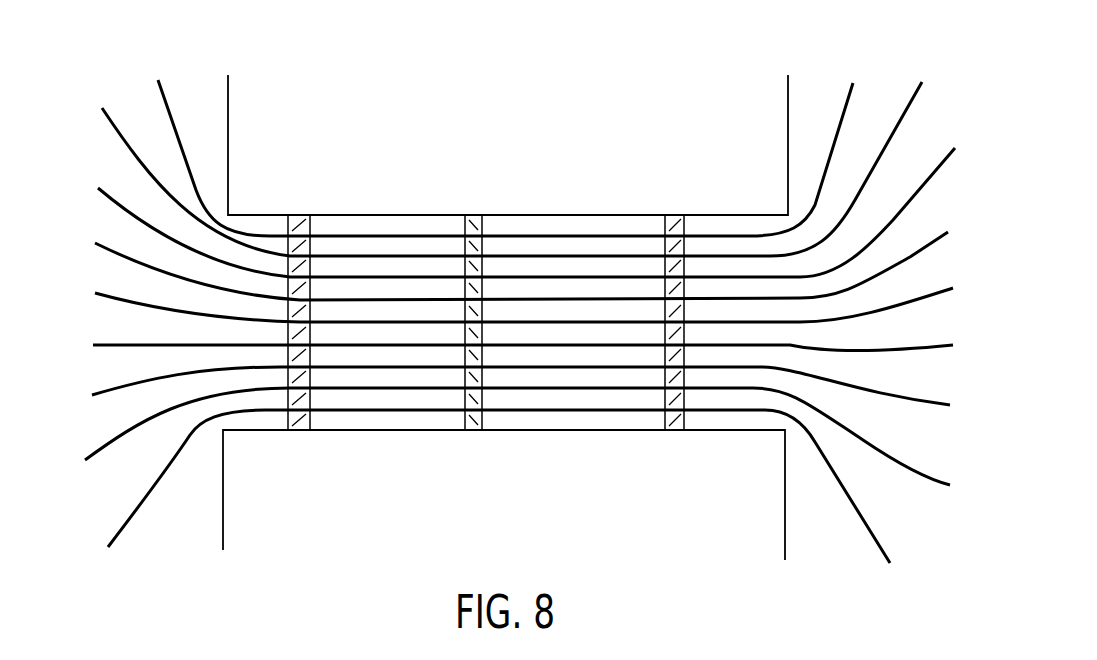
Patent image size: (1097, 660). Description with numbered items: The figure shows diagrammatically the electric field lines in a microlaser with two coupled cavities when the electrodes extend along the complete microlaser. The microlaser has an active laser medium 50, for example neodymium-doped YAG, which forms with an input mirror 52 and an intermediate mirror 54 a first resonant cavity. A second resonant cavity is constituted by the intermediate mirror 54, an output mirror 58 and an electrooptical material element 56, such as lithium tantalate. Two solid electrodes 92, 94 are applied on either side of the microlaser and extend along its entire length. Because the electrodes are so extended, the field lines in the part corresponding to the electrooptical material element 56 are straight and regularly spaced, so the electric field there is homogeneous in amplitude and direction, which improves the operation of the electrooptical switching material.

The active laser medium 50 is at (387, 422).
The input mirror 52 is at (312, 218).
The intermediate mirror 54 is at (482, 413).
The electrooptical material element 56 is at (678, 430).
The output mirror 58 is at (685, 218).
The solid electrode 92 is at (217, 507).
The solid electrode 94 is at (773, 107).